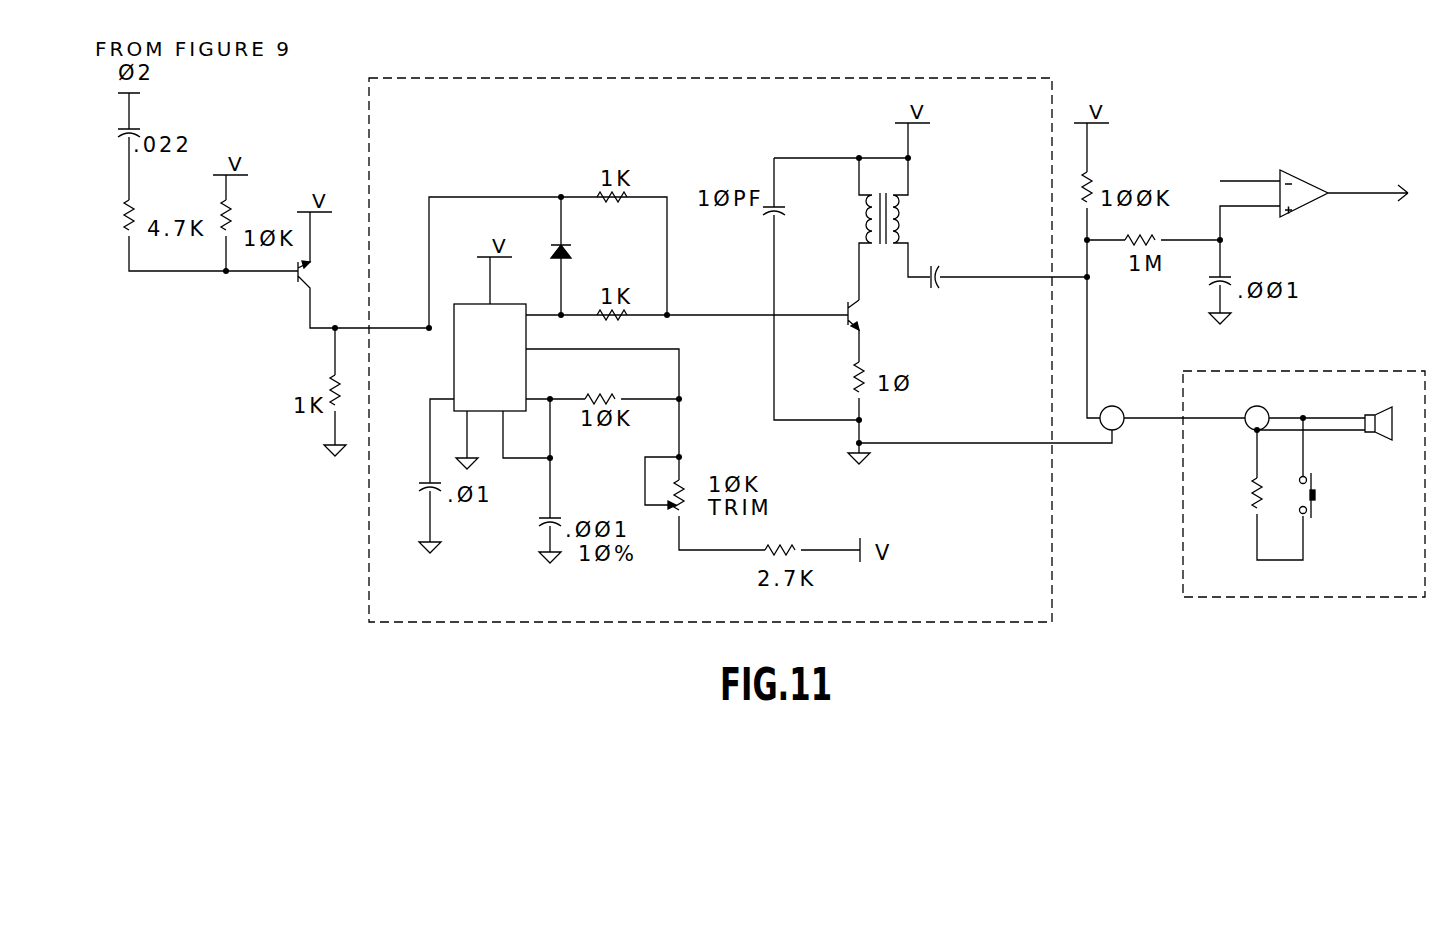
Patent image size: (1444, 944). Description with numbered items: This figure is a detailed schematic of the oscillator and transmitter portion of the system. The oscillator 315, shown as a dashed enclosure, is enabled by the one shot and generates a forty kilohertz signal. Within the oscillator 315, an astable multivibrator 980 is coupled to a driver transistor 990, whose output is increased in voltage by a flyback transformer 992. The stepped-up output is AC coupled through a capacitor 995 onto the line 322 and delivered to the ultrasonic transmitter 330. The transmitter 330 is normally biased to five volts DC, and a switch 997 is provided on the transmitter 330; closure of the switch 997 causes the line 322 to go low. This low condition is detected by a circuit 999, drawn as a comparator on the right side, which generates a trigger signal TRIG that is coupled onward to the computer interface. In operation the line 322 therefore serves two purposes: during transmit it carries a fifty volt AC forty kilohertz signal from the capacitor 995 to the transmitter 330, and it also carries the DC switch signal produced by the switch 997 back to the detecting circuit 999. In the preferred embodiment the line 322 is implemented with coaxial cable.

The oscillator 315 is at (710, 350).
The astable multivibrator 980 is at (491, 360).
The flyback transformer 992 is at (866, 229).
The capacitor 995 is at (1009, 285).
The driver transistor 990 is at (888, 331).
The circuit 999 is at (1303, 191).
The line 322 is at (1125, 410).
The ultrasonic transmitter 330 is at (1304, 484).
The switch 997 is at (1341, 495).